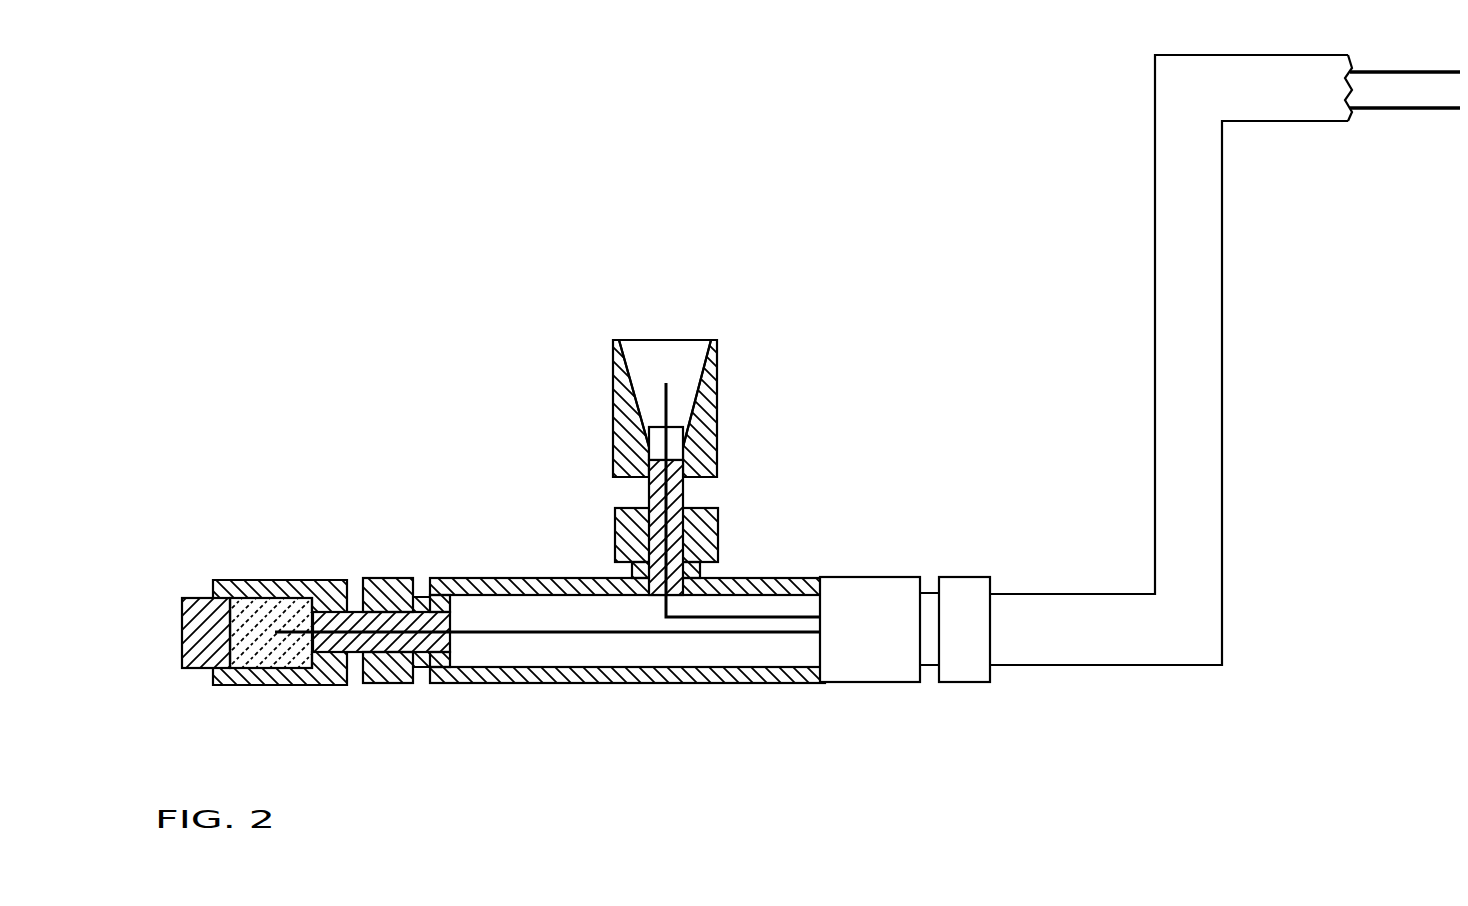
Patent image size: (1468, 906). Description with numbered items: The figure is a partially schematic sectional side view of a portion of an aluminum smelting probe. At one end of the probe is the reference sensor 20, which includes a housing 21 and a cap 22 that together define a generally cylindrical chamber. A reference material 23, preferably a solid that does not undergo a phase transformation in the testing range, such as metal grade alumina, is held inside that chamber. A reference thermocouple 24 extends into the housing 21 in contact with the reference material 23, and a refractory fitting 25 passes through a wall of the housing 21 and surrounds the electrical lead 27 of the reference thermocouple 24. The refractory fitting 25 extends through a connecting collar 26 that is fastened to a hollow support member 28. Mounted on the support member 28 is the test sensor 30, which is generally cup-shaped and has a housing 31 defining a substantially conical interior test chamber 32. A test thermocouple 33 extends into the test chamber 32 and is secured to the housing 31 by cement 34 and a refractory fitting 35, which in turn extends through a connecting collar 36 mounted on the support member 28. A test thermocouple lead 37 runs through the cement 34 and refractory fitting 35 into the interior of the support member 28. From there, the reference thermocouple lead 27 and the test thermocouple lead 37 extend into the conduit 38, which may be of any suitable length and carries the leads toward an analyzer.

The reference sensor 20 is at (267, 568).
The housing 21 is at (290, 685).
The cap 22 is at (197, 668).
The reference material 23 is at (265, 668).
The reference thermocouple 24 is at (295, 600).
The refractory fitting 25 is at (357, 612).
The connecting collar 26 is at (398, 683).
The electrical lead 27 is at (540, 633).
The hollow support member 28 is at (680, 683).
The test sensor 30 is at (708, 328).
The housing 31 is at (718, 413).
The test chamber 32 is at (632, 372).
The test thermocouple 33 is at (670, 400).
The cement 34 is at (683, 450).
The refractory fitting 35 is at (683, 493).
The connecting collar 36 is at (615, 533).
The test thermocouple lead 37 is at (905, 603).
The conduit 38 is at (1308, 118).